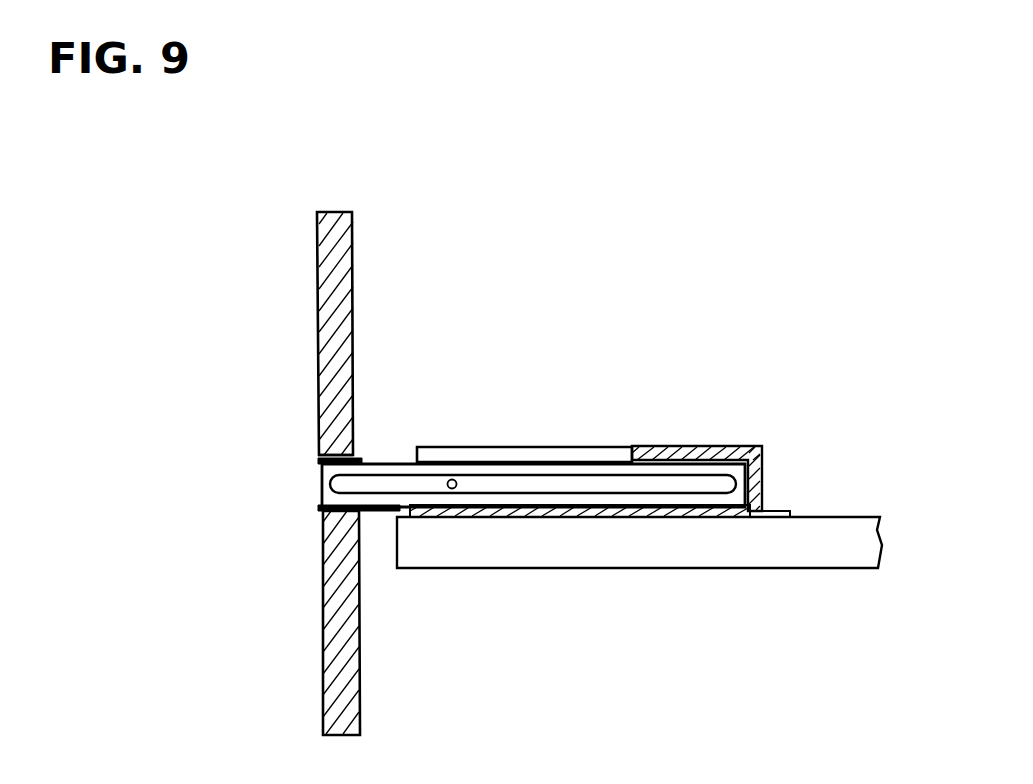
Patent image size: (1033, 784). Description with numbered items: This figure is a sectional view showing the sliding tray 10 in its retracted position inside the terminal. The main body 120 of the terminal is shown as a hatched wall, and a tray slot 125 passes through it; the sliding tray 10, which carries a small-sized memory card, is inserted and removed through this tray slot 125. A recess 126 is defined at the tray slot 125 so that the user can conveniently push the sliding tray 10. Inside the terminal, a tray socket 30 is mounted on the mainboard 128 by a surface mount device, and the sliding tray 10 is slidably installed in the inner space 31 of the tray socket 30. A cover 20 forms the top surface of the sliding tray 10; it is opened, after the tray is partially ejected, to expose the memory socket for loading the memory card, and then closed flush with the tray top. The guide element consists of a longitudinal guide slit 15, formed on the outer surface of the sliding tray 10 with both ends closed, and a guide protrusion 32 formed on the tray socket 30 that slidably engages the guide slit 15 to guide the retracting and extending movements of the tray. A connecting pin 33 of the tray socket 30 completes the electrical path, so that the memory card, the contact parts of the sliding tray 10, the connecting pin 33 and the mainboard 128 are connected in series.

The main body 120 is at (319, 362).
The recess 126 is at (328, 437).
The tray slot 125 is at (320, 456).
The sliding tray 10 is at (385, 466).
The guide slit 15 is at (385, 478).
The guide protrusion 32 is at (453, 489).
The cover 20 is at (535, 470).
The tray socket 30 is at (763, 458).
The inner space 31 is at (755, 445).
The connecting pin 33 is at (785, 510).
The mainboard 128 is at (733, 568).